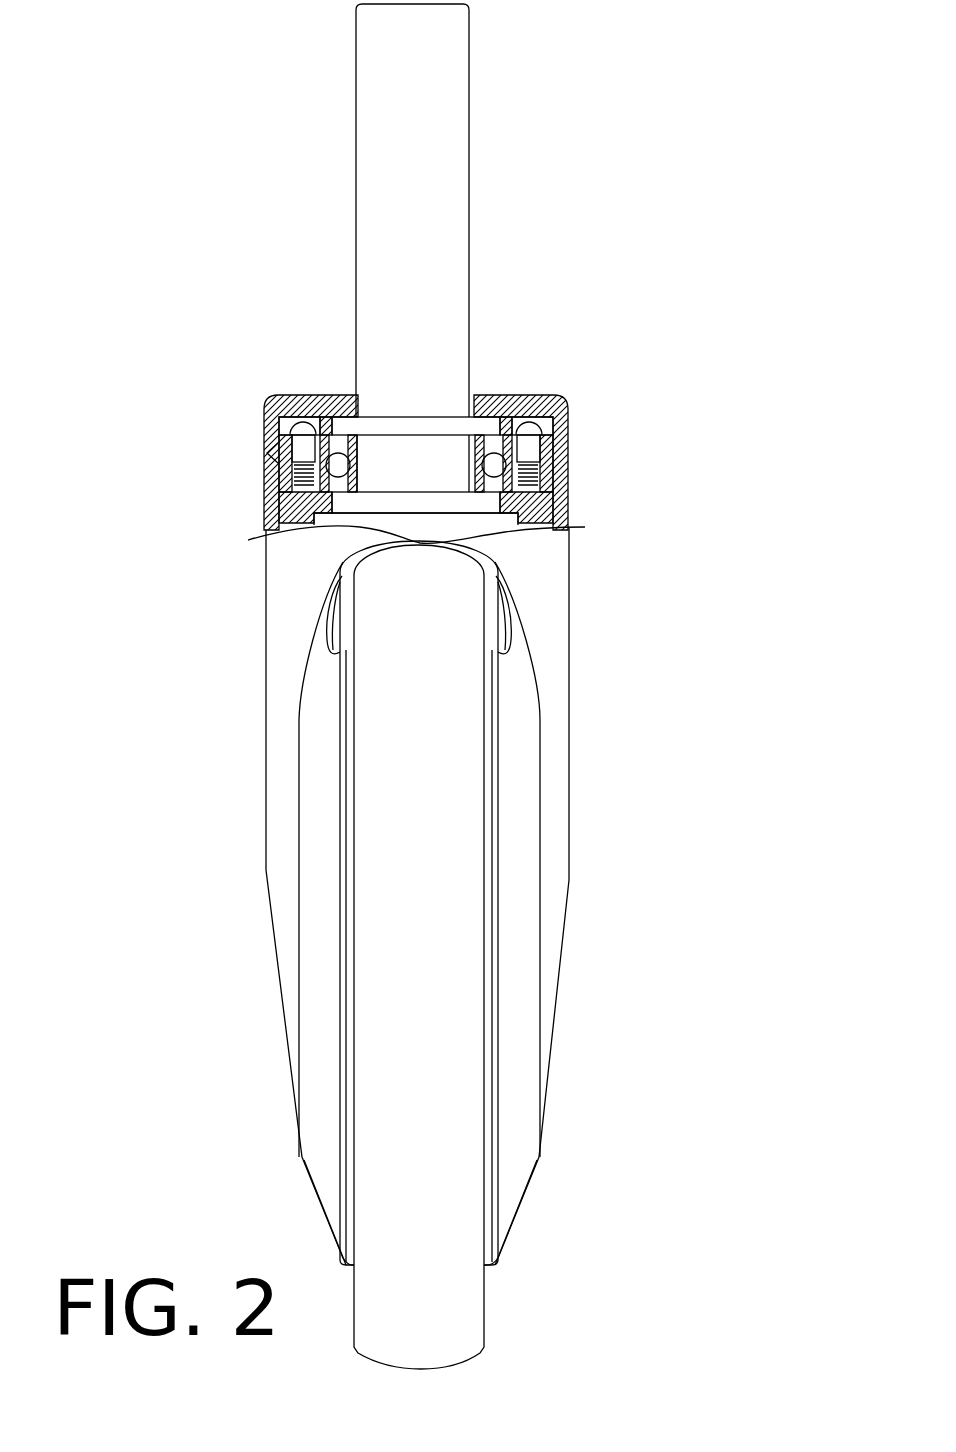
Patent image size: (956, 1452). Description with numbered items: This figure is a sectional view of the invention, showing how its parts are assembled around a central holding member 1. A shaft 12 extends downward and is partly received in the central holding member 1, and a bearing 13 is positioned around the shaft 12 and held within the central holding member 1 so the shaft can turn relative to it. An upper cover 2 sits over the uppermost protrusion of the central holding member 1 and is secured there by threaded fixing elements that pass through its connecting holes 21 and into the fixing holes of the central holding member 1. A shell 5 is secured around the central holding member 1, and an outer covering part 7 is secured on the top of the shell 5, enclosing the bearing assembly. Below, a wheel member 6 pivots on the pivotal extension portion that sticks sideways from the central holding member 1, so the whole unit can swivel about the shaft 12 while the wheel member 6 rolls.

The central holding member 1 is at (578, 518).
The upper cover 2 is at (275, 457).
The shell 5 is at (566, 489).
The wheel member 6 is at (420, 903).
The outer covering part 7 is at (523, 400).
The shaft 12 is at (427, 228).
The bearing 13 is at (338, 460).
The connecting holes 21 is at (288, 400).